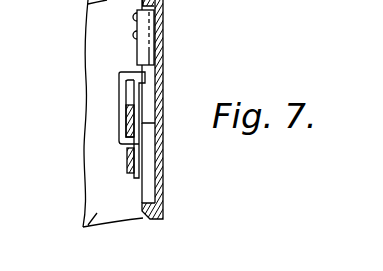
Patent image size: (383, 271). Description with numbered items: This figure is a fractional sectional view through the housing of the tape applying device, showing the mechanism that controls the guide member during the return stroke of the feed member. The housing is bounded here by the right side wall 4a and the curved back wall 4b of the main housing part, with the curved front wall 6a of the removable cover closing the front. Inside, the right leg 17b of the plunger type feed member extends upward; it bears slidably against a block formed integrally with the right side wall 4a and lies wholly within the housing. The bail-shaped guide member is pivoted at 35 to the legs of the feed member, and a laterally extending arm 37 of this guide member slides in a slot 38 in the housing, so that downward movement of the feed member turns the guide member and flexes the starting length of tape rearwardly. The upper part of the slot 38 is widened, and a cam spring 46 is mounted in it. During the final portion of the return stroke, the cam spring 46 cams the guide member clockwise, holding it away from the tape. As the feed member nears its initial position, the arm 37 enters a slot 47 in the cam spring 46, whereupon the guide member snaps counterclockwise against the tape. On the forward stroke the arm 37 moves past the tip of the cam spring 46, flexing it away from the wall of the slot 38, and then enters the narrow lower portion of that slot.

The right side wall 4a is at (165, 215).
The curved back wall 4b is at (155, 120).
The slot in cam spring 47 is at (151, 65).
The cam spring 46 is at (147, 99).
The slot in housing 38 is at (147, 168).
The laterally extending arm 37 is at (118, 84).
The pivot 35 is at (125, 149).
The right leg 17b is at (128, 165).
The curved front wall 6a is at (83, 227).